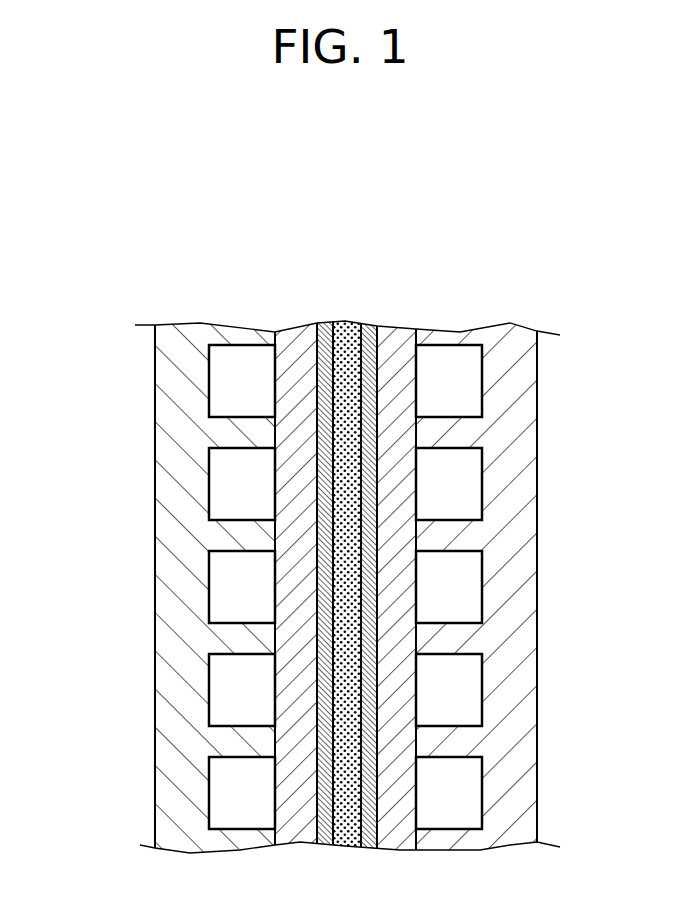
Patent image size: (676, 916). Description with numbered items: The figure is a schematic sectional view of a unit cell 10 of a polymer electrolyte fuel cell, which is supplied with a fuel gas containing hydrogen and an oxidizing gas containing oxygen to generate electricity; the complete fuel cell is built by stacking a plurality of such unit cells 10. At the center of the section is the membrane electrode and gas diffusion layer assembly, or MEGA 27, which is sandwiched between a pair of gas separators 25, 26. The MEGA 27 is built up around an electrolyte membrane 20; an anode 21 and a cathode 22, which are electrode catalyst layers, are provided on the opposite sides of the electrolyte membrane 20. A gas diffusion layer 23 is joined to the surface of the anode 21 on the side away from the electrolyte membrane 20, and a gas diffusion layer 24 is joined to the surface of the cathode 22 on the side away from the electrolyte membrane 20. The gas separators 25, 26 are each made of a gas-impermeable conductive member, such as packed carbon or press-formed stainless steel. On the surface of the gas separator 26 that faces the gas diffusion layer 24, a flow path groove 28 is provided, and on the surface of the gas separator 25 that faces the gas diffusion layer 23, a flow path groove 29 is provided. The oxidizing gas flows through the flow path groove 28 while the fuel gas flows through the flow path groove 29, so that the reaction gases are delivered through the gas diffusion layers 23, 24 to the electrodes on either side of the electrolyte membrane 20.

The unit cell 10 is at (127, 275).
The electrolyte membrane 20 is at (348, 325).
The anode 21 is at (370, 546).
The cathode 22 is at (323, 326).
The gas diffusion layer 23 is at (398, 330).
The gas diffusion layer 24 is at (296, 330).
The gas separator 25 is at (466, 334).
The gas separator 26 is at (226, 333).
The membrane electrode and gas diffusion layer assembly (MEGA) 27 is at (347, 524).
The flow path groove 28 is at (237, 728).
The flow path groove 29 is at (465, 728).